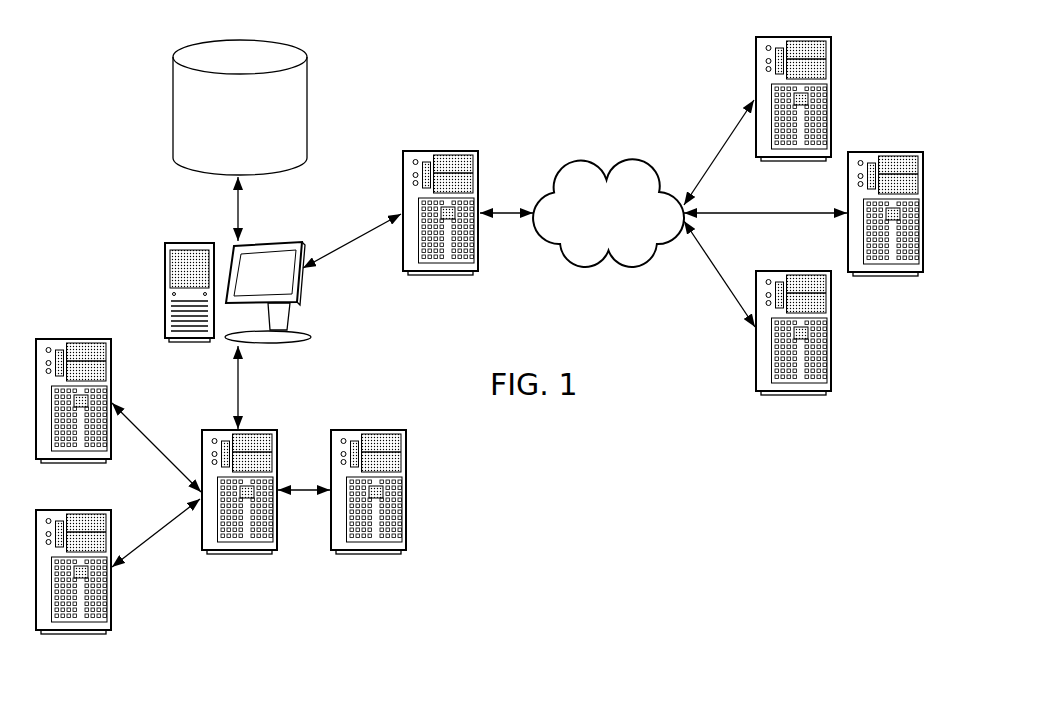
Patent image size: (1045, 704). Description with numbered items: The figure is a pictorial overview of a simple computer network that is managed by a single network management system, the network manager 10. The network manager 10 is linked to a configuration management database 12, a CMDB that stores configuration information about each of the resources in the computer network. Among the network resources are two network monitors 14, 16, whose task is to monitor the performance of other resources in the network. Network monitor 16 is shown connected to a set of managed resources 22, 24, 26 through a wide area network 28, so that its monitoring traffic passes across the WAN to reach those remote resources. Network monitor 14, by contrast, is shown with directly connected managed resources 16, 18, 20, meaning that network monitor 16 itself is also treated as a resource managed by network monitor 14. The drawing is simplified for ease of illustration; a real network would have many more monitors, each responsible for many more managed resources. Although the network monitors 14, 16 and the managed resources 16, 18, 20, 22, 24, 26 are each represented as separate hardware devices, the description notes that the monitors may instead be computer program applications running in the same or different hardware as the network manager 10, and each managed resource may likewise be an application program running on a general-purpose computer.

The network manager 10 is at (360, 238).
The configuration management database 12 is at (308, 104).
The network monitor 14 is at (277, 430).
The network monitor 16 is at (441, 150).
The managed resource 18 is at (74, 510).
The managed resource 20 is at (405, 490).
The managed resource 22 is at (795, 37).
The managed resource 24 is at (885, 148).
The managed resource 26 is at (829, 333).
The wide area network (WAN) 28 is at (628, 157).